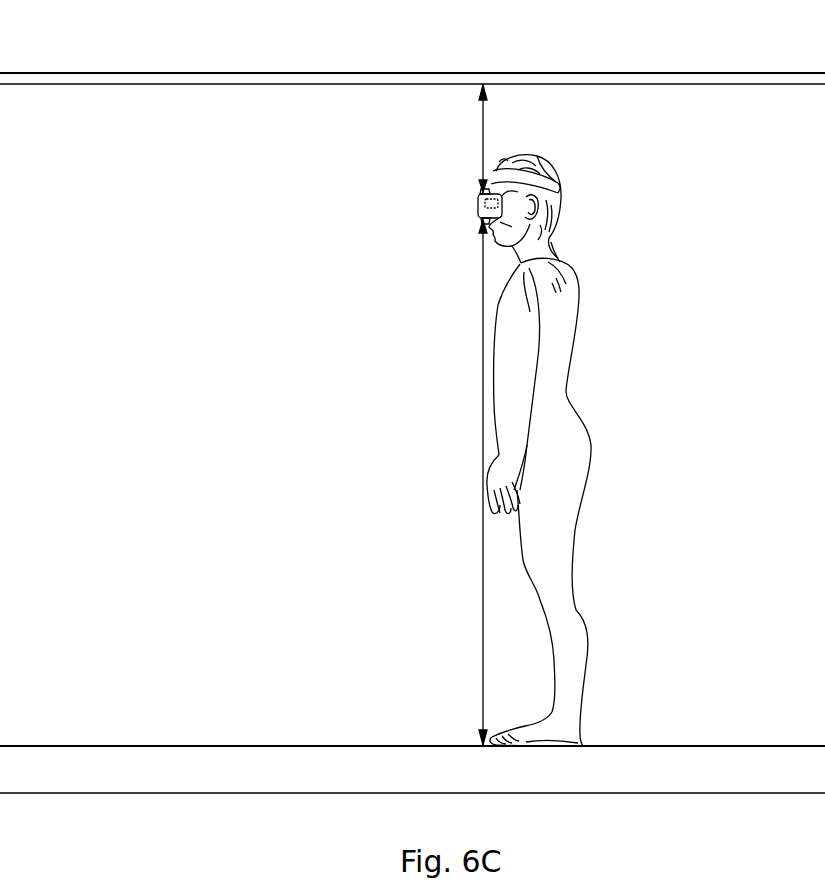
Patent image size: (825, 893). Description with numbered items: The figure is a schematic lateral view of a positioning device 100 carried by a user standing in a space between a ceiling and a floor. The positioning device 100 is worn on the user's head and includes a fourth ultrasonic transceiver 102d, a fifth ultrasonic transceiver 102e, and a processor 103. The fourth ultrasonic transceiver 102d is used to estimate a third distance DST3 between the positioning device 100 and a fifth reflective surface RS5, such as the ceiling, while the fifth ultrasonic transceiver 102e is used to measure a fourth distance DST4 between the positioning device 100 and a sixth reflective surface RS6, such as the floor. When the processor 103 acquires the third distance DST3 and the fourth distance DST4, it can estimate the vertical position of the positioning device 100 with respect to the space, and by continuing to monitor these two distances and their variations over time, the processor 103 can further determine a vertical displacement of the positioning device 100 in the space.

The fifth reflective surface RS5 is at (447, 84).
The sixth reflective surface RS6 is at (710, 746).
The third distance DST3 is at (483, 112).
The fourth distance DST4 is at (483, 271).
The positioning device 100 is at (513, 189).
The fourth ultrasonic transceiver 102d is at (480, 192).
The processor 103 is at (478, 204).
The fifth ultrasonic transceiver 102e is at (481, 221).